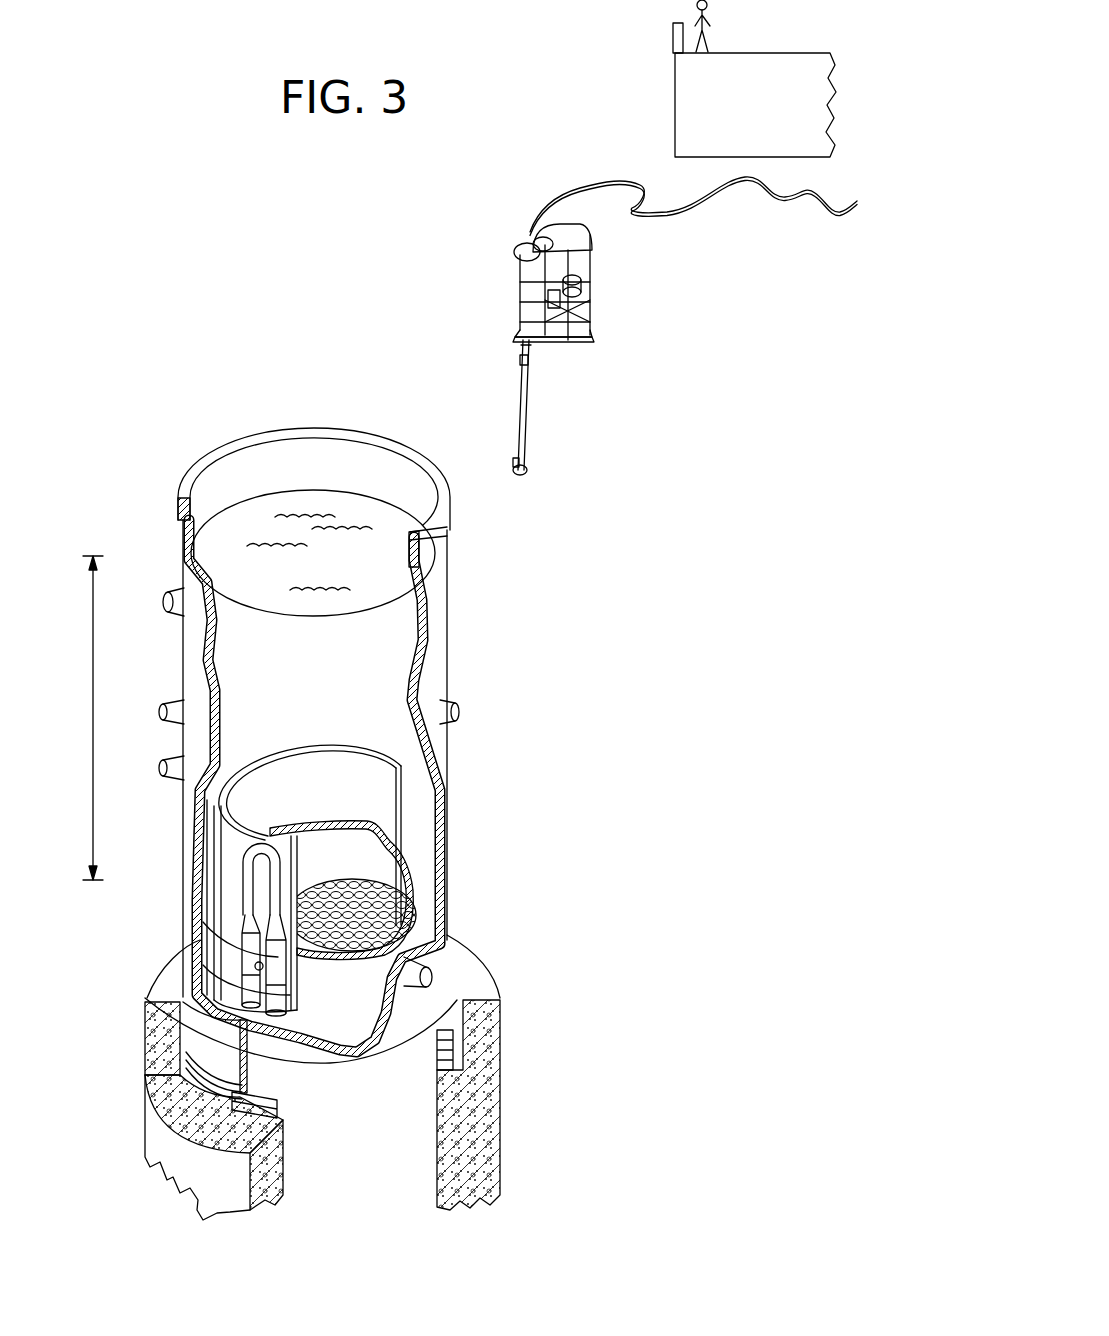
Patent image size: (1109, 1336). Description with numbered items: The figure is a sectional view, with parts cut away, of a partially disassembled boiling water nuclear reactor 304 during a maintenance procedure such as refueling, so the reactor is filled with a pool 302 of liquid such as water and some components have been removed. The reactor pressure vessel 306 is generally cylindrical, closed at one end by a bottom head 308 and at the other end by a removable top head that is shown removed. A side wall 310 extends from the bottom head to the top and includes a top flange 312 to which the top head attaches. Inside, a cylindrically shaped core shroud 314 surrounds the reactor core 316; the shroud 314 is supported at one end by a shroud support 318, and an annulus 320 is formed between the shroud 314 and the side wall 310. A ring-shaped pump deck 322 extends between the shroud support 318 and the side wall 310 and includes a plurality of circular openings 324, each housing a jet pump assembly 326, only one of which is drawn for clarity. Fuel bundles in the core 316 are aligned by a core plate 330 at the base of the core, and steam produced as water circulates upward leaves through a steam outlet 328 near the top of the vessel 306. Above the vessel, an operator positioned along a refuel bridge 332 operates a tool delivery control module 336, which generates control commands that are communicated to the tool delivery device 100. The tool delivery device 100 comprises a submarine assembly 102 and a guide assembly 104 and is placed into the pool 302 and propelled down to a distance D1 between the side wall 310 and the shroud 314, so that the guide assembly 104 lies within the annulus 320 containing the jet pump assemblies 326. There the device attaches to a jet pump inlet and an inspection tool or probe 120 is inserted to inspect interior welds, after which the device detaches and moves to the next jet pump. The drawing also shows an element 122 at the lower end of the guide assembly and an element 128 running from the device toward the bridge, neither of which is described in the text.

The tool delivery device 100 is at (590, 286).
The submarine assembly 102 is at (582, 340).
The guide assembly 104 is at (530, 425).
The inspection tool 120 is at (517, 455).
The probe tip 122 is at (528, 460).
The tether cable 128 is at (658, 216).
The pool 302 is at (313, 507).
The nuclear reactor 304 is at (397, 405).
The reactor pressure vessel 306 is at (190, 465).
The bottom head 308 is at (387, 1050).
The side wall 310 is at (440, 668).
The top flange 312 is at (440, 540).
The core shroud 314 is at (308, 745).
The reactor core 316 is at (370, 860).
The shroud support 318 is at (228, 958).
The annulus 320 is at (205, 862).
The pump deck 322 is at (218, 978).
The circular openings 324 is at (210, 988).
The jet pump assembly 326 is at (245, 872).
The steam outlet 328 is at (176, 601).
The core plate 330 is at (405, 912).
The refuel bridge 332 is at (762, 50).
The tool delivery control module 336 is at (673, 38).
The distance D1 is at (97, 718).